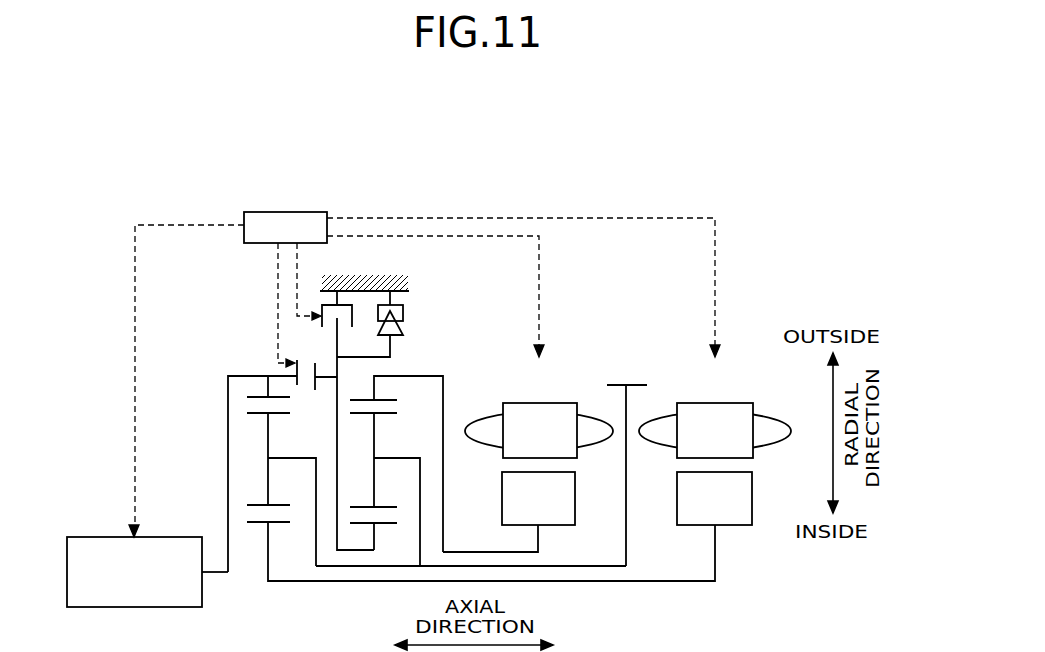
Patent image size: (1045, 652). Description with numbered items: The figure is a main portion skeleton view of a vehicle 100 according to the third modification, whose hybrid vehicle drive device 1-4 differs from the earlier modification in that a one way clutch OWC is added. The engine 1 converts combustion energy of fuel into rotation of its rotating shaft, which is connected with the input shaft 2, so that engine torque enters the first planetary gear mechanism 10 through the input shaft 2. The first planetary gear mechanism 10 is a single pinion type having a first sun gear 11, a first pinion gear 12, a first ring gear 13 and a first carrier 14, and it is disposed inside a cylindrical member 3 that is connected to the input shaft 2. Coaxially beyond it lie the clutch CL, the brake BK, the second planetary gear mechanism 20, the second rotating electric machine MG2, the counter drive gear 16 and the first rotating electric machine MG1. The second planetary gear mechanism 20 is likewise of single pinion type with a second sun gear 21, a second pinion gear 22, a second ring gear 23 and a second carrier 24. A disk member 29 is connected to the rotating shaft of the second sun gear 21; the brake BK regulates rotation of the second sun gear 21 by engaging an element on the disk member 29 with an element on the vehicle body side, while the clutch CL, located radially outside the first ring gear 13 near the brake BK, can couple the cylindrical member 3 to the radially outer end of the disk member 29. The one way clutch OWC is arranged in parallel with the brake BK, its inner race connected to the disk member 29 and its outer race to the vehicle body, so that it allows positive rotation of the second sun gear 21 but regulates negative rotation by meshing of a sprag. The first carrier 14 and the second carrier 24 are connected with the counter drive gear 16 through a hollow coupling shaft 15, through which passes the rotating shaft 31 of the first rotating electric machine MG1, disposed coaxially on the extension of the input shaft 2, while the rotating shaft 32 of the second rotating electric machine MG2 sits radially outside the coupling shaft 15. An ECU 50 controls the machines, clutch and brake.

The engine 1 is at (93, 535).
The input shaft 2 is at (218, 575).
The cylindrical member 3 is at (240, 376).
The first planetary gear mechanism 10 is at (311, 495).
The first sun gear 11 is at (250, 519).
The first pinion gear 12 is at (258, 509).
The first ring gear 13 is at (255, 399).
The first carrier 14 is at (303, 458).
The coupling shaft 15 is at (593, 567).
The counter drive gear 16 is at (626, 383).
The second planetary gear mechanism 20 is at (397, 486).
The second sun gear 21 is at (395, 524).
The second pinion gear 22 is at (395, 507).
The second ring gear 23 is at (393, 403).
The second carrier 24 is at (405, 458).
The disk member 29 is at (338, 462).
The rotating shaft of the first rotating electric machine 31 is at (655, 582).
The rotating shaft of the second rotating electric machine 32 is at (470, 552).
The ECU 50 is at (298, 212).
The vehicle 100 is at (574, 146).
The hybrid vehicle drive device 1-4 is at (406, 180).
The brake BK is at (310, 324).
The clutch CL is at (288, 368).
The one way clutch OWC is at (414, 324).
The first rotating electric machine MG1 is at (712, 403).
The second rotating electric machine MG2 is at (540, 403).